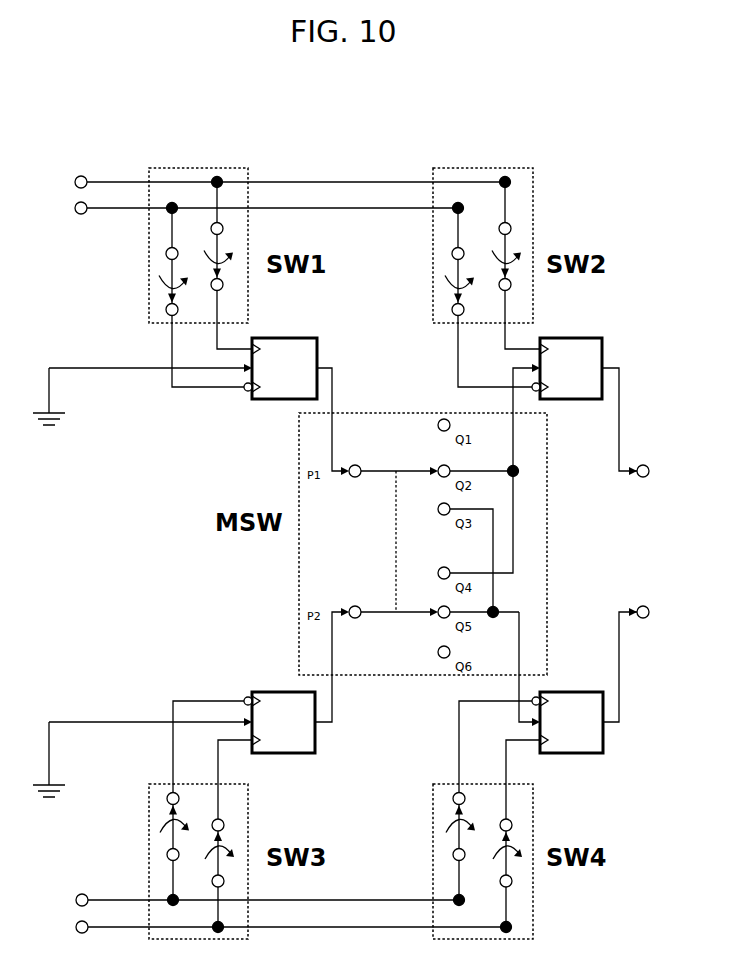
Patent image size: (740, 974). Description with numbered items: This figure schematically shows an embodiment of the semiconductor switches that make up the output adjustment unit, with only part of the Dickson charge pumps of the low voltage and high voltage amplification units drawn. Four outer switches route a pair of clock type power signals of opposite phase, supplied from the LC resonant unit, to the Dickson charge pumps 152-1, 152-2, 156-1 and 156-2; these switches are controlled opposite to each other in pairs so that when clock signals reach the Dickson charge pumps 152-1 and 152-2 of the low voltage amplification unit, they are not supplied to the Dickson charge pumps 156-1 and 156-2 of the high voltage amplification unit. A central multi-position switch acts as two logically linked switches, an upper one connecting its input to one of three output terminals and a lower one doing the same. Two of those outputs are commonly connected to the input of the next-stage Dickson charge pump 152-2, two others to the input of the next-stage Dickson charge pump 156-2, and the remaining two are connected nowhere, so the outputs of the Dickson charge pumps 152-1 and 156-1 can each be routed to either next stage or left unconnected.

The Dickson charge pump 152-1 is at (293, 338).
The Dickson charge pump 152-2 is at (577, 338).
The Dickson charge pump 156-1 is at (295, 753).
The Dickson charge pump 156-2 is at (583, 753).